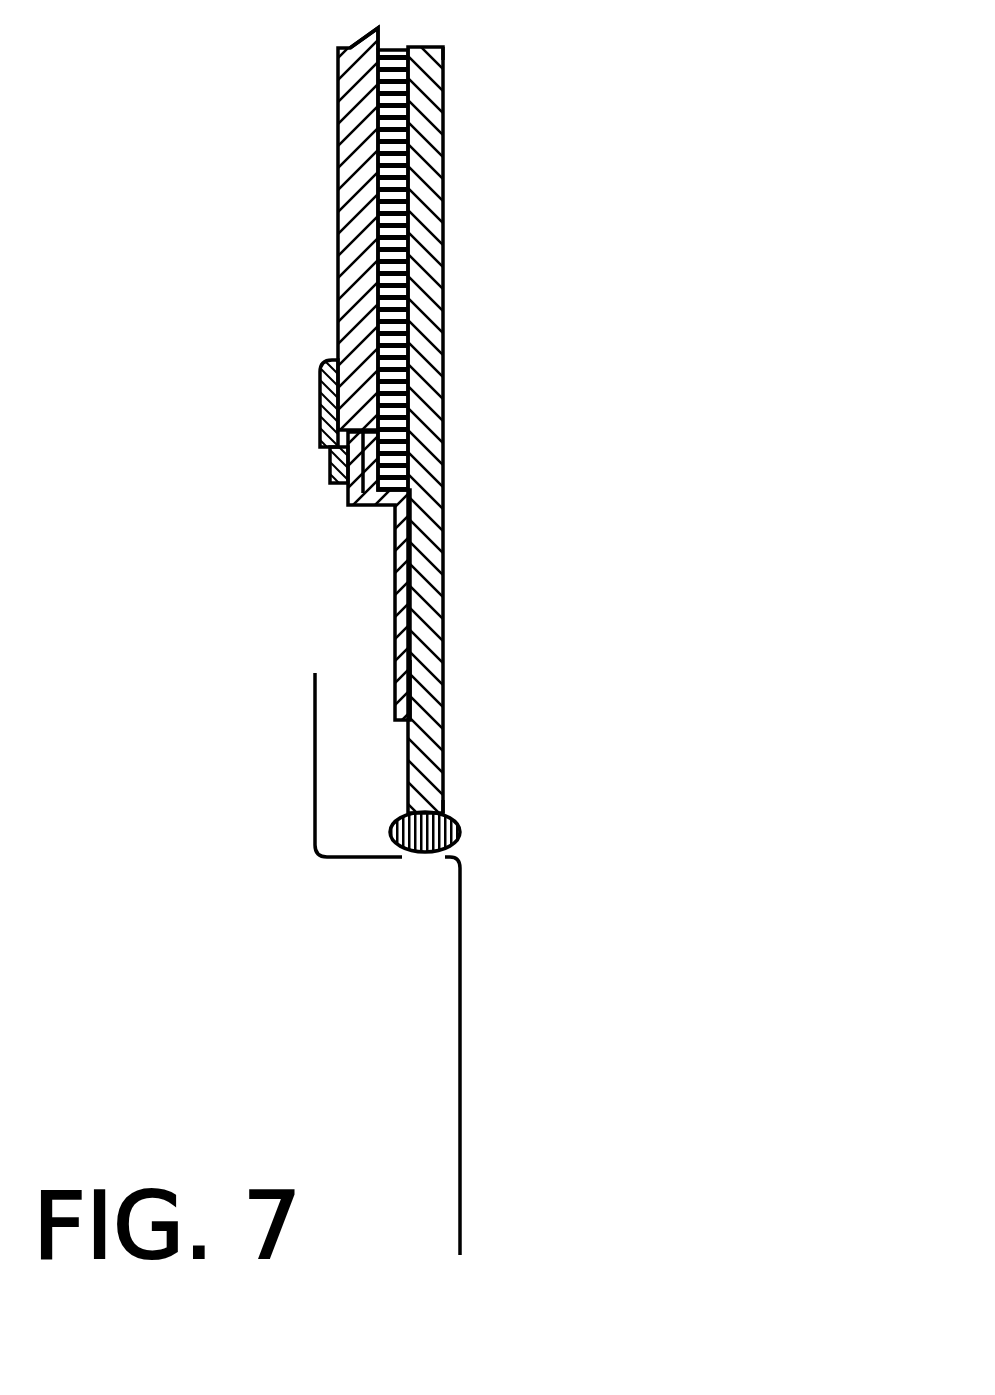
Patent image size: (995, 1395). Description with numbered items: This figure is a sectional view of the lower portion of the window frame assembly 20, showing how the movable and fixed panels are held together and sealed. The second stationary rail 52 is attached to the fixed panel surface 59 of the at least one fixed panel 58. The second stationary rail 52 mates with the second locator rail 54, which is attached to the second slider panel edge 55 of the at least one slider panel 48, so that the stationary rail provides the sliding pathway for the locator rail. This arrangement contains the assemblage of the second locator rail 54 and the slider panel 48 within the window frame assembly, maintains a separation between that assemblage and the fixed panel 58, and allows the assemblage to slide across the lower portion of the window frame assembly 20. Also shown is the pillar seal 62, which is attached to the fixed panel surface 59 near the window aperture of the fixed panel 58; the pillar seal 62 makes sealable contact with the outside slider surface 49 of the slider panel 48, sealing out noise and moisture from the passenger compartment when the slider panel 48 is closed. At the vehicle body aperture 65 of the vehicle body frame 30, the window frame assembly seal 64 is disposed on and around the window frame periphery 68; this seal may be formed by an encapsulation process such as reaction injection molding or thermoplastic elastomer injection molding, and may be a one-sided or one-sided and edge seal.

The window frame assembly 20 is at (570, 68).
The vehicle body frame 30 is at (458, 1043).
The slider panel 48 is at (345, 162).
The outside slider surface 49 is at (376, 32).
The second stationary rail 52 is at (400, 590).
The second locator rail 54 is at (323, 372).
The second slider panel edge 55 is at (334, 452).
The fixed panel 58 is at (425, 482).
The fixed panel surface 59 is at (422, 690).
The pillar seal 62 is at (406, 234).
The window frame assembly seal 64 is at (460, 828).
The vehicle body aperture 65 is at (585, 838).
The window frame periphery 68 is at (423, 855).